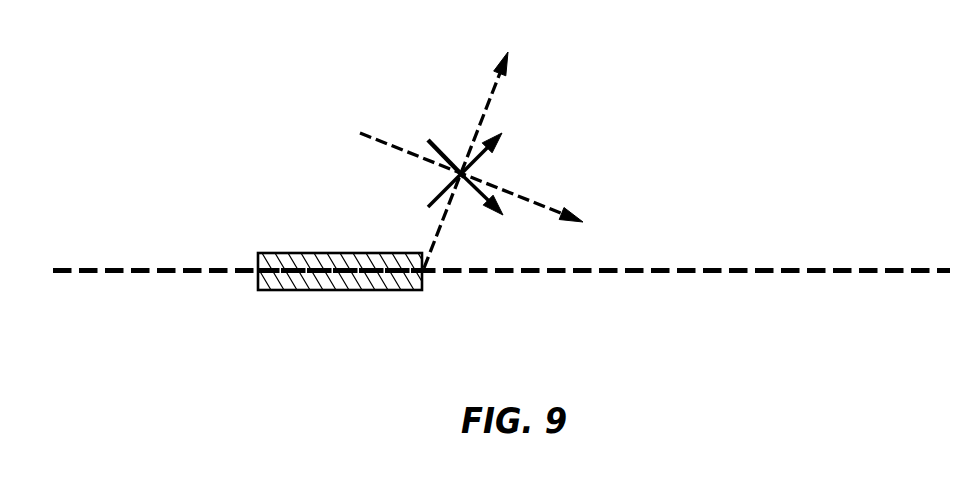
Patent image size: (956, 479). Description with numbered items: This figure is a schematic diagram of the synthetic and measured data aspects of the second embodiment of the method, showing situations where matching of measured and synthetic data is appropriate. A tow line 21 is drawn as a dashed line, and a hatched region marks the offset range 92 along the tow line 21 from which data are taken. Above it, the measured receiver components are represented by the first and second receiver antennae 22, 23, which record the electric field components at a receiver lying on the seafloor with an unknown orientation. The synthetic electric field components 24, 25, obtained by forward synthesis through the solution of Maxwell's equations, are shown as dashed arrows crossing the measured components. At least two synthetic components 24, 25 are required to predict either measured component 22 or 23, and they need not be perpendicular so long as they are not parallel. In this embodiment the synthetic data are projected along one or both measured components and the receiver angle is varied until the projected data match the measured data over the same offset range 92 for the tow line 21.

The tow line 21 is at (737, 268).
The first receiver antenna 22 is at (498, 143).
The second receiver antenna 23 is at (448, 148).
The synthetic electric field component 24 is at (570, 206).
The synthetic electric field component 25 is at (510, 61).
The offset range 92 is at (306, 253).